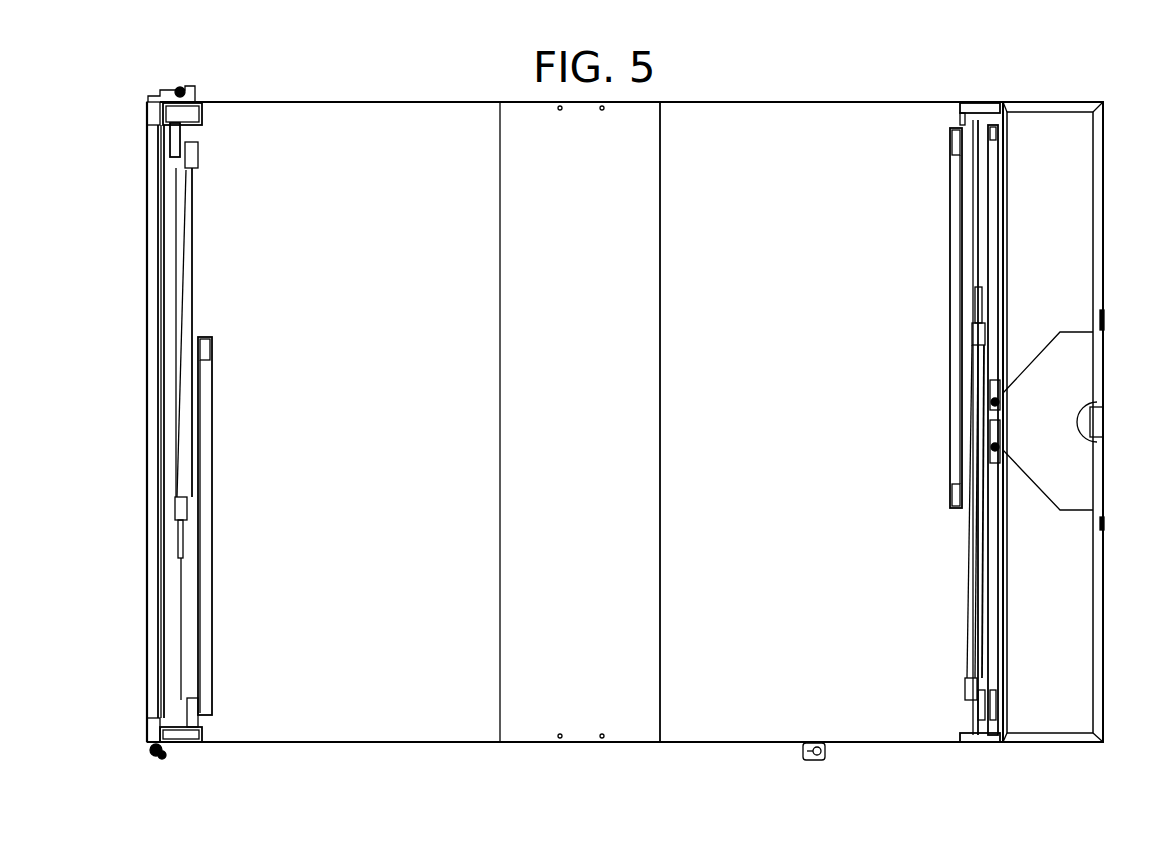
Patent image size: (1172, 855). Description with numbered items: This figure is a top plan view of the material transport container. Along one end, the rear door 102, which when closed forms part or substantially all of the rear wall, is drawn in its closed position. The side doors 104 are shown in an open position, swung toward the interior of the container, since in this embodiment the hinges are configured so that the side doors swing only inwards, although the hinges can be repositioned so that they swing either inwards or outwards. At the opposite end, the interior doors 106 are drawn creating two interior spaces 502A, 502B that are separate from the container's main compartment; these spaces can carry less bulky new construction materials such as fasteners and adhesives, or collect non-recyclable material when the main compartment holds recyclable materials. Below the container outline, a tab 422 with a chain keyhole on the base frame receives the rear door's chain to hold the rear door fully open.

The rear door 102 is at (155, 332).
The side doors 104 is at (214, 313).
The interior doors 106 is at (993, 242).
The tab 422 is at (805, 760).
The interior space 502A is at (1048, 631).
The interior space 502B is at (1057, 269).